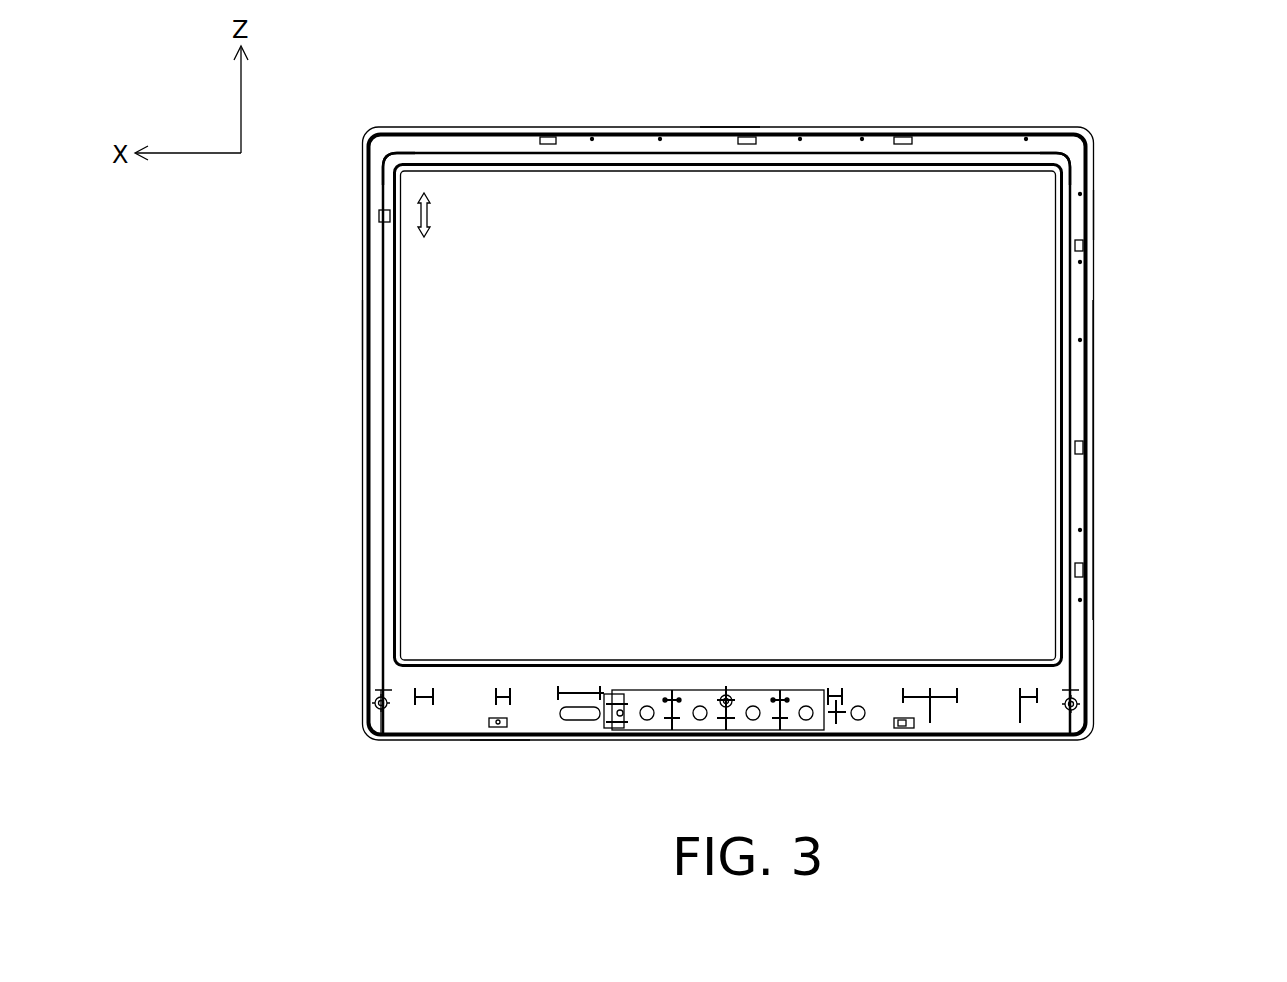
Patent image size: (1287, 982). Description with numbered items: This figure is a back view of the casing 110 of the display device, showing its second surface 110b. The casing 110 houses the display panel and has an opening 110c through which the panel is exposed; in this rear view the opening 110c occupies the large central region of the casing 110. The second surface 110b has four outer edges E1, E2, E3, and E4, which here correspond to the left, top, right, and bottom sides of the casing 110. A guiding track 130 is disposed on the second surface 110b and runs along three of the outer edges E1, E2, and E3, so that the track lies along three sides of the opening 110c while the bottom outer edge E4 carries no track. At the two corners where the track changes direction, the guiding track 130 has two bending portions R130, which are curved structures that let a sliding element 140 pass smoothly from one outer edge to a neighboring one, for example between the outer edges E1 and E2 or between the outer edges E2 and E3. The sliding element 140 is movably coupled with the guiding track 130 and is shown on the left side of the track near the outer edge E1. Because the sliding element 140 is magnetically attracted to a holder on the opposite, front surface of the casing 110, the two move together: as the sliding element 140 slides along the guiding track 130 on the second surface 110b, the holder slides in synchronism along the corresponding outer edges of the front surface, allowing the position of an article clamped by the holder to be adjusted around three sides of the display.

The casing 110 is at (1076, 404).
The second surface 110b is at (1075, 481).
The opening 110c is at (912, 246).
The guiding track 130 is at (1070, 305).
The bending portions R130 is at (389, 152).
The sliding element 140 is at (378, 216).
The outer edge E1 is at (362, 330).
The outer edge E2 is at (728, 127).
The outer edge E3 is at (1094, 216).
The outer edge E4 is at (498, 742).